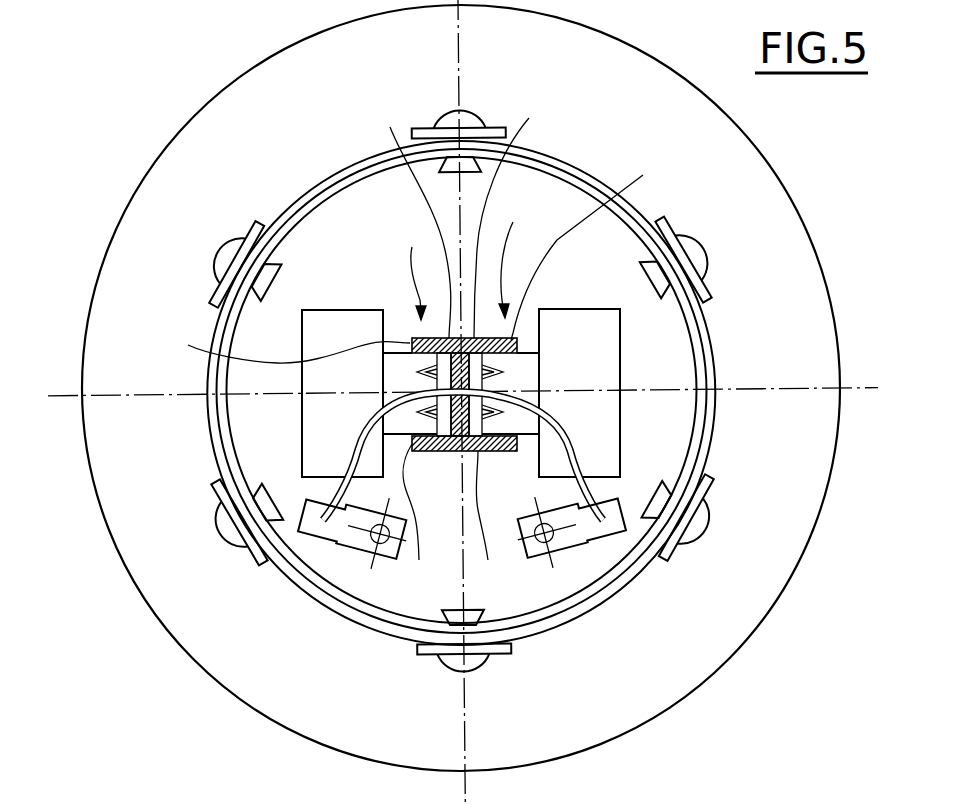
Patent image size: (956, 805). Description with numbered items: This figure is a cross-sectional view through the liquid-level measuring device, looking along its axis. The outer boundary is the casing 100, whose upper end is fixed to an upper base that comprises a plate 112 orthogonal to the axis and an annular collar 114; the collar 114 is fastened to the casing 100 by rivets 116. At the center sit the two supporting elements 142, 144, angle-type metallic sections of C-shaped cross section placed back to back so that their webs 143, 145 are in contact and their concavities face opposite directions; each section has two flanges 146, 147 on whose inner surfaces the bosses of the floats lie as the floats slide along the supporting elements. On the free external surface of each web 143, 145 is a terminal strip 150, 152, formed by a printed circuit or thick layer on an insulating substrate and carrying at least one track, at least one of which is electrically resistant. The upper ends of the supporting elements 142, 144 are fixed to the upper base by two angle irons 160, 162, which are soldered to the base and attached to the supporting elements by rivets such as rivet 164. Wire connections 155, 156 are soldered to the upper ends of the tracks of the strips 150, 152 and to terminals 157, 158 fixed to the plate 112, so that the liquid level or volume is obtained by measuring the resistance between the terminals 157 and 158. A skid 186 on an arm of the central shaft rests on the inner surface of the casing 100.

The casing 100 is at (710, 351).
The plate 112 is at (770, 568).
The annular collar 114 is at (392, 623).
The rivets 116 is at (468, 118).
The supporting element 142 is at (420, 266).
The web 143 is at (408, 212).
The supporting element 144 is at (531, 253).
The web 145 is at (527, 217).
The flange 146 is at (290, 459).
The flange 147 is at (583, 369).
The terminal strip 150 is at (405, 399).
The terminal strip 152 is at (470, 452).
The wire connection 155 is at (383, 440).
The wire connection 156 is at (577, 452).
The terminal 157 is at (352, 545).
The terminal 158 is at (566, 545).
The angle iron 160 is at (584, 323).
The angle iron 162 is at (330, 326).
The rivet 164 is at (490, 388).
The skid 186 is at (594, 798).